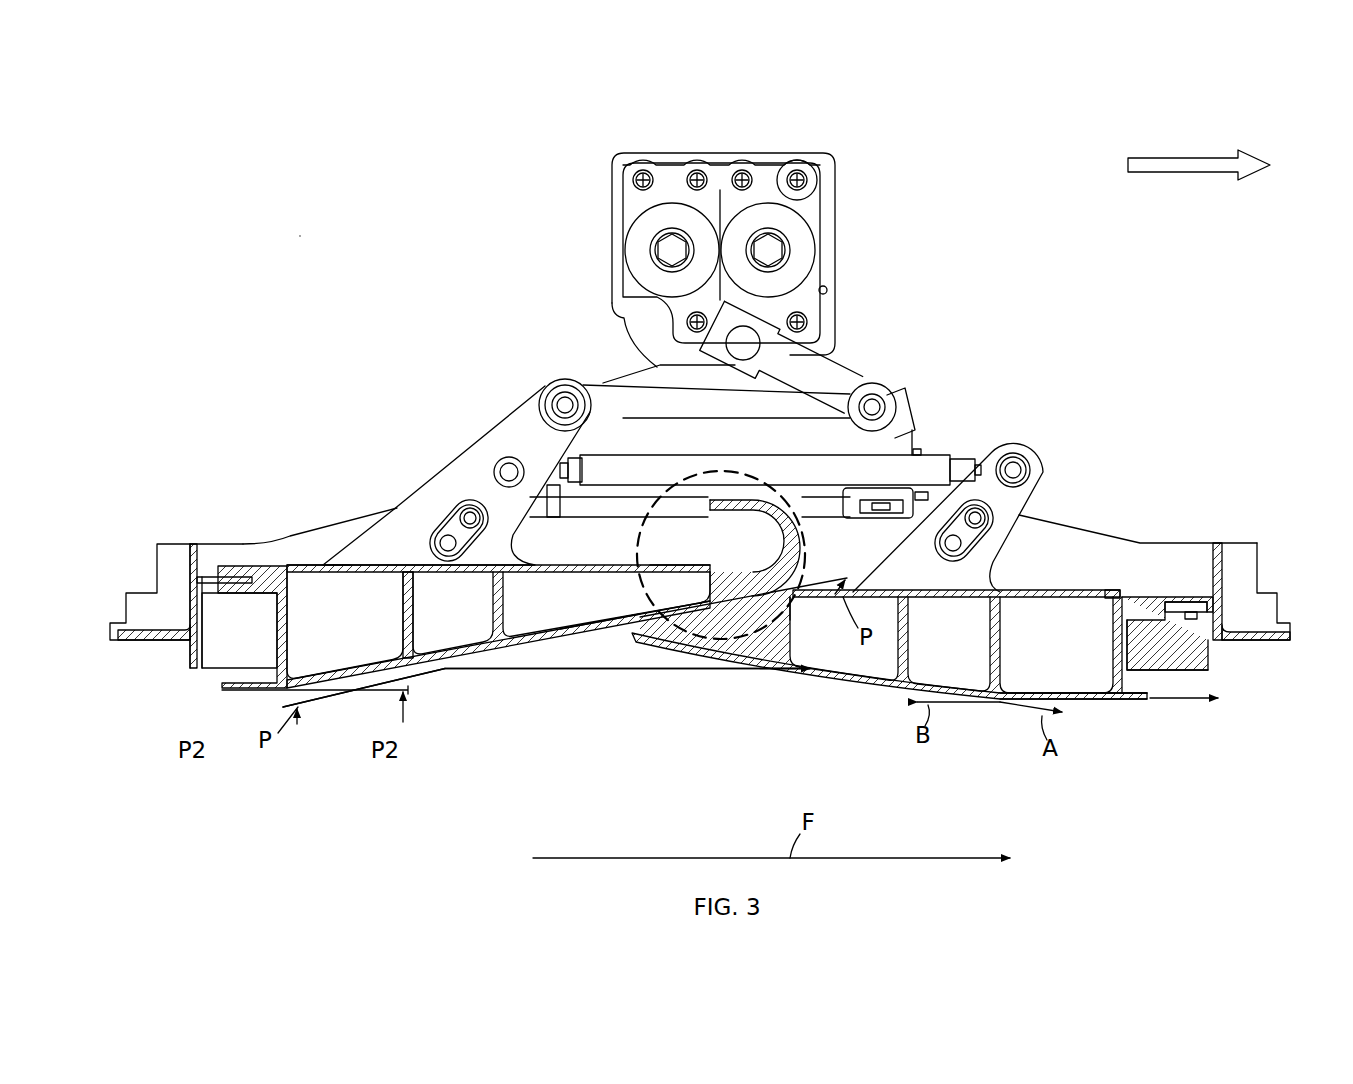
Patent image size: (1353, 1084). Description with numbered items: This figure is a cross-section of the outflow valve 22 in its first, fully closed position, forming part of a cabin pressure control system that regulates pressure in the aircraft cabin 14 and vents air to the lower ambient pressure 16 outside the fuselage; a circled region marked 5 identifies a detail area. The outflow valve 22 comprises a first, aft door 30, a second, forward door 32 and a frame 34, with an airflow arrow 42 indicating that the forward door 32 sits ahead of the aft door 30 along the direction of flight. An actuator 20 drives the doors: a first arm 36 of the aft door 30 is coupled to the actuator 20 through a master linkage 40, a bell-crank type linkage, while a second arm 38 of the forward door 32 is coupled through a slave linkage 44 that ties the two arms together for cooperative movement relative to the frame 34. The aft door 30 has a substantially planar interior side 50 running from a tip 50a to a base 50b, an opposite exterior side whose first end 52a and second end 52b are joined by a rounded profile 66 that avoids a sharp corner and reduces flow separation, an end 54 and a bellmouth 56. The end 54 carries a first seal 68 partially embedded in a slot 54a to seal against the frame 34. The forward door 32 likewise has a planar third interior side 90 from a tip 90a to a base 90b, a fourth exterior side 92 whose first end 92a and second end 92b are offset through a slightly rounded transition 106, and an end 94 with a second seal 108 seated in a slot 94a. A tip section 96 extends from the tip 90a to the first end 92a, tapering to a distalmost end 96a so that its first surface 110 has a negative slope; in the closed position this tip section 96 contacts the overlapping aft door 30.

The cabin 14 is at (944, 361).
The ambient pressure 16 is at (839, 784).
The actuator 20 is at (714, 152).
The outflow valve 22 is at (310, 243).
The first, aft door 30 is at (318, 748).
The second, forward door 32 is at (1032, 760).
The frame 34 is at (283, 538).
The first arm 36 is at (520, 425).
The second arm 38 is at (1023, 460).
The master linkage 40 is at (830, 378).
The airflow arrow 42 is at (1125, 165).
The slave linkage 44 is at (938, 452).
The first, interior side 50 is at (603, 560).
The tip of the interior side 50a is at (714, 570).
The base of the interior side 50b is at (290, 566).
The first end of the exterior side 52a is at (705, 612).
The second end of the exterior side 52b is at (292, 691).
The end 54 is at (198, 683).
The slot 54a is at (248, 580).
The bellmouth 56 is at (778, 496).
The profile 66 is at (434, 675).
The first seal 68 is at (205, 577).
The third interior side 90 is at (1030, 580).
The tip of the third interior side 90a is at (793, 600).
The base of the third interior side 90b is at (1112, 590).
The fourth exterior side 92 is at (958, 704).
The first end of the fourth exterior side 92a is at (792, 670).
The second end of the fourth exterior side 92b is at (1120, 702).
The end 94 is at (1167, 706).
The slot 94a is at (1172, 603).
The tip section 96 is at (720, 690).
The distalmost end of the tip section 96a is at (634, 638).
The transition 106 is at (998, 702).
The second seal 108 is at (1200, 618).
The first surface 110 is at (708, 610).
The detail view circle FIG. 5 is at (636, 588).